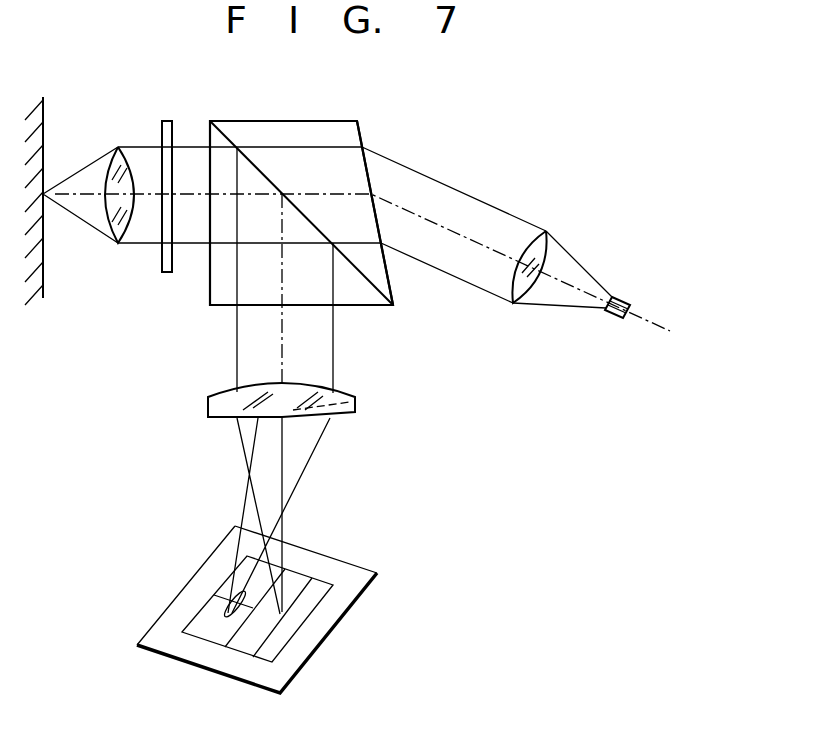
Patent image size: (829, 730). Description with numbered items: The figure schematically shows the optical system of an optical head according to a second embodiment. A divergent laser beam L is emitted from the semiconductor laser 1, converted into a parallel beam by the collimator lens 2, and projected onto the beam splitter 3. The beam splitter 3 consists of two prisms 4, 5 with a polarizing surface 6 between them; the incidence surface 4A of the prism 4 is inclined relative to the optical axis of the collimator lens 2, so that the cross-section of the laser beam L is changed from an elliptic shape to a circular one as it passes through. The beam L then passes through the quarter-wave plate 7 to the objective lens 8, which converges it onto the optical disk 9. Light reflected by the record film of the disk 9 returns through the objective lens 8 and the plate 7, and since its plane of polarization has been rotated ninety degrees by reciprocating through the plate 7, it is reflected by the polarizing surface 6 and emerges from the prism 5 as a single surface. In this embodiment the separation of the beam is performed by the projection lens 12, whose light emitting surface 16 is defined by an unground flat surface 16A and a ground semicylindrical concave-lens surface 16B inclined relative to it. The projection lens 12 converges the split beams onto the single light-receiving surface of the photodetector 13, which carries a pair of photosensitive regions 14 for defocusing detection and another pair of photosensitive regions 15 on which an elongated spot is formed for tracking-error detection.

The semiconductor laser 1 is at (617, 296).
The collimator lens 2 is at (549, 233).
The beam splitter 3 is at (304, 184).
The prism 4 is at (338, 121).
The incidence surface 4A is at (360, 135).
The prism 5 is at (215, 283).
The polarizing surface 6 is at (226, 128).
The quarter-wave plate 7 is at (167, 121).
The objective lens 8 is at (124, 147).
The optical disk 9 is at (48, 110).
The projection lens 12 is at (278, 410).
The photodetector 13 is at (264, 615).
The photosensitive regions for defocusing detection 14 is at (265, 652).
The photosensitive regions for tracking-error detection 15 is at (207, 615).
The light emitting surface 16 is at (250, 419).
The flat surface 16A is at (243, 418).
The concave-lens surface 16B is at (336, 418).
The laser beam L is at (552, 304).